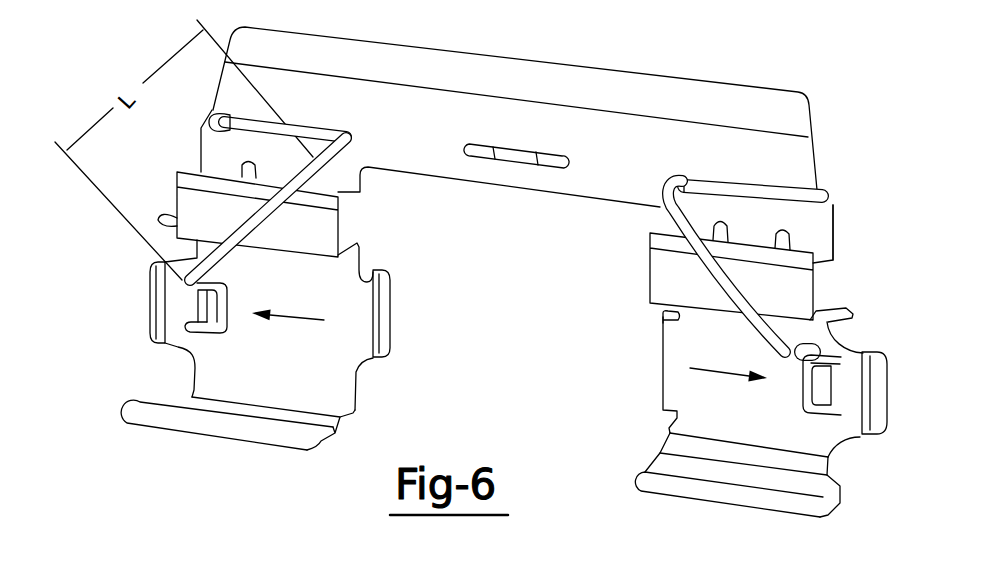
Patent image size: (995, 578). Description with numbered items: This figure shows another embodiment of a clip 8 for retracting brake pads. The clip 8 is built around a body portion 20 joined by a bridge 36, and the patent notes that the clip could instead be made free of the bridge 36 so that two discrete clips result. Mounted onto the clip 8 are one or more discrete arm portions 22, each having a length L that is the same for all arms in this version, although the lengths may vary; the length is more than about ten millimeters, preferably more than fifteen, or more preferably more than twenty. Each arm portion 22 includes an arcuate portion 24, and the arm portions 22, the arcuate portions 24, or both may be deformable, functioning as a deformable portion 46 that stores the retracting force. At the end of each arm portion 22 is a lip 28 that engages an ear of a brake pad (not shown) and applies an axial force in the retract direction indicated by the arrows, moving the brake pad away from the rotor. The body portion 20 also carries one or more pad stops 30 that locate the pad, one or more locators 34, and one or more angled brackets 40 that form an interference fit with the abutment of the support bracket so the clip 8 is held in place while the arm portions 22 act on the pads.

The clip 8 is at (831, 93).
The body portion 20 is at (313, 363).
The arm portions 22 is at (257, 217).
The arcuate portions 24 is at (335, 157).
The lip 28 is at (858, 355).
The pad stops 30 is at (210, 337).
The locators 34 is at (385, 303).
The bridge 36 is at (550, 82).
The angled brackets 40 is at (793, 280).
The deformable portion 46 is at (342, 185).